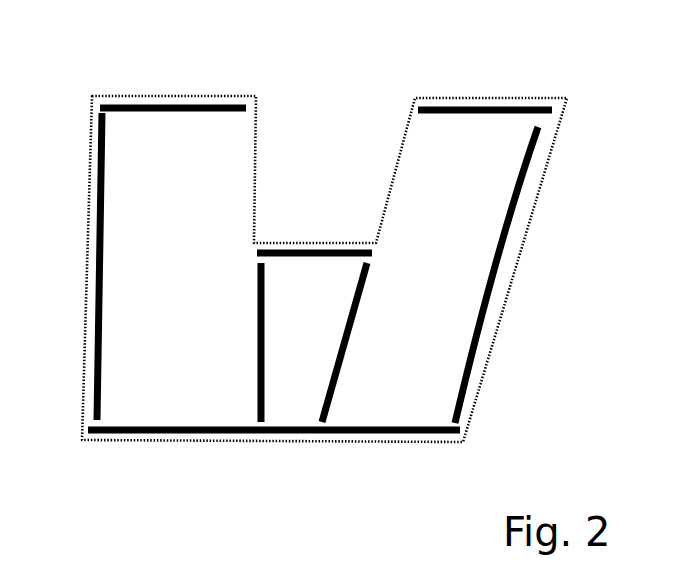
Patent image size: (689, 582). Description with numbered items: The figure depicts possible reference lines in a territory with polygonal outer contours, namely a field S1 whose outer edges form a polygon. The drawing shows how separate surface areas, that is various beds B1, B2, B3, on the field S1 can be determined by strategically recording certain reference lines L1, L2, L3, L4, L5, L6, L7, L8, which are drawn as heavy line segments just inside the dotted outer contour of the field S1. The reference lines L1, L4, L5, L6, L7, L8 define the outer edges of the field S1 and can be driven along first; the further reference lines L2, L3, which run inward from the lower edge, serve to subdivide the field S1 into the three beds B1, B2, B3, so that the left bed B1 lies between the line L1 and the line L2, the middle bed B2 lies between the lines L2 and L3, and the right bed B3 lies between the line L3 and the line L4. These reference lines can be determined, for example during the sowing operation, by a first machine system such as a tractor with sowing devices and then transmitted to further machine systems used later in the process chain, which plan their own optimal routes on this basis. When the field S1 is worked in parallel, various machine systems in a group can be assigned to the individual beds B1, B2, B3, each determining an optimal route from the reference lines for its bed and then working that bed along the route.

The field S1 is at (489, 98).
The reference line L1 is at (97, 252).
The reference line L2 is at (258, 385).
The reference line L3 is at (335, 383).
The reference line L4 is at (513, 210).
The reference line L5 is at (167, 430).
The reference line L6 is at (177, 108).
The reference line L7 is at (314, 253).
The reference line L8 is at (525, 110).
The bed B1 is at (138, 338).
The bed B2 is at (302, 383).
The bed B3 is at (453, 333).